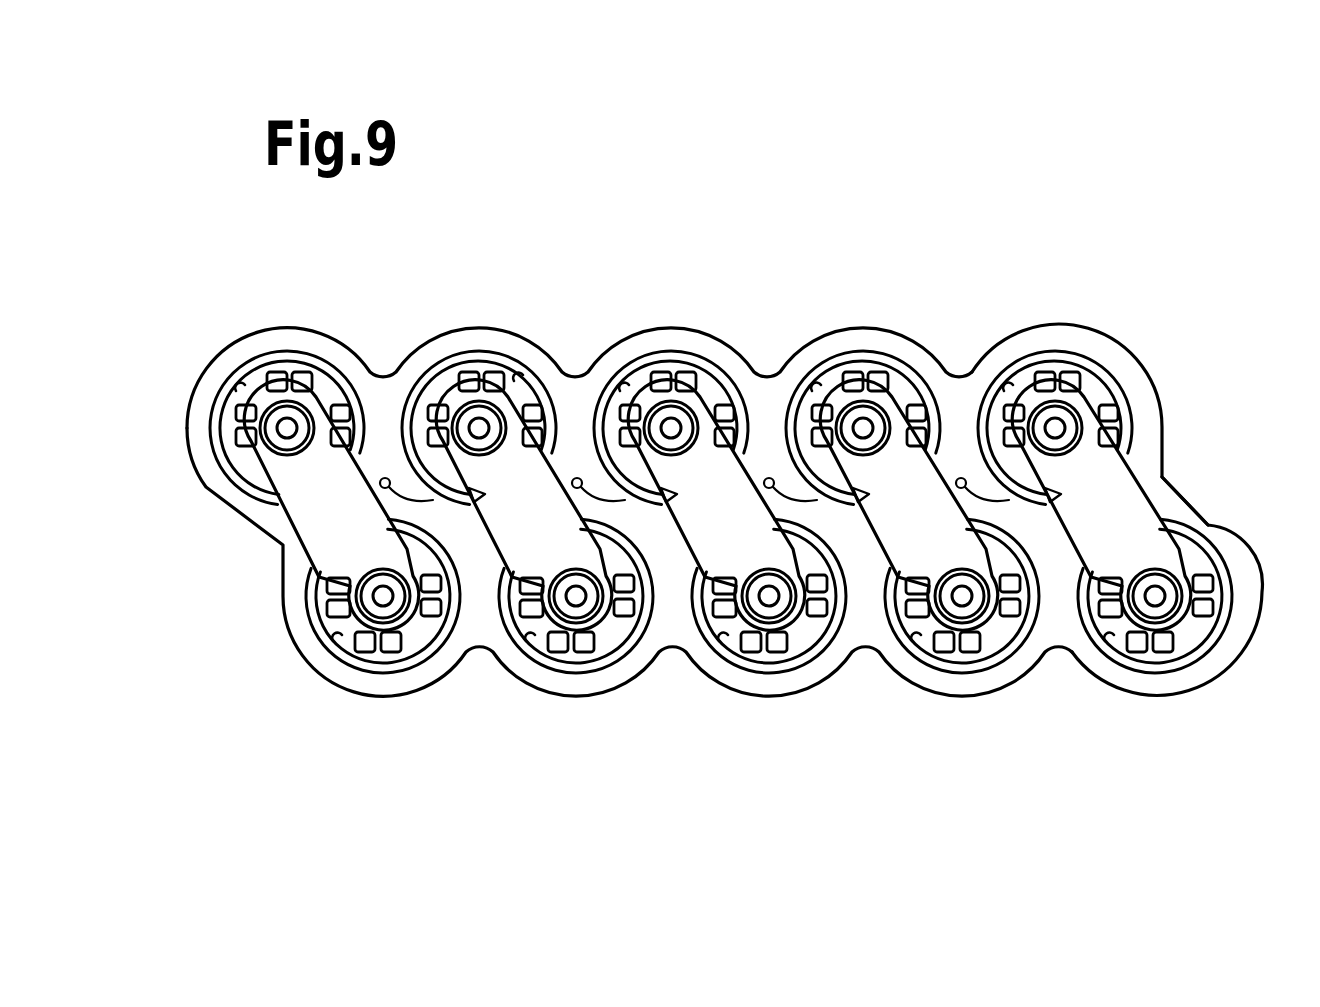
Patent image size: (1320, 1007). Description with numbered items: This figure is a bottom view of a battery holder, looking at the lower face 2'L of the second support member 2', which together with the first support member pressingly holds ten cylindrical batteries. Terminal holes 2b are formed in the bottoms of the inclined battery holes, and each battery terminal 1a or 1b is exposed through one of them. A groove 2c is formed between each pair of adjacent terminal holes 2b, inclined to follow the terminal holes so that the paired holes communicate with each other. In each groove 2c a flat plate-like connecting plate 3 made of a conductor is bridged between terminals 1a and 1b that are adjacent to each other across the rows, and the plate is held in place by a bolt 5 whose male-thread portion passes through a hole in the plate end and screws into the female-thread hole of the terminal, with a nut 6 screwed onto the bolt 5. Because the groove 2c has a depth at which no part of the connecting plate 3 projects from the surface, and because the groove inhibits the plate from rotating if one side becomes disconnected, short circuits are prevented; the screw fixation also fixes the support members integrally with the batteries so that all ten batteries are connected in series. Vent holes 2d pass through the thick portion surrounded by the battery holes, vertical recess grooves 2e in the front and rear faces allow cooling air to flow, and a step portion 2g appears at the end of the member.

The terminal 1a is at (392, 652).
The terminal 1b is at (272, 364).
The second support member 2' is at (682, 459).
The lower face of the second support member 2'L is at (1146, 561).
The terminal hole 2b is at (238, 390).
The groove 2c is at (305, 508).
The vent hole 2d is at (474, 497).
The vertical recess groove 2e is at (381, 362).
The step portion 2g is at (1141, 470).
The connecting plate 3 is at (340, 530).
The bolt 5 is at (668, 423).
The nut 6 is at (673, 400).